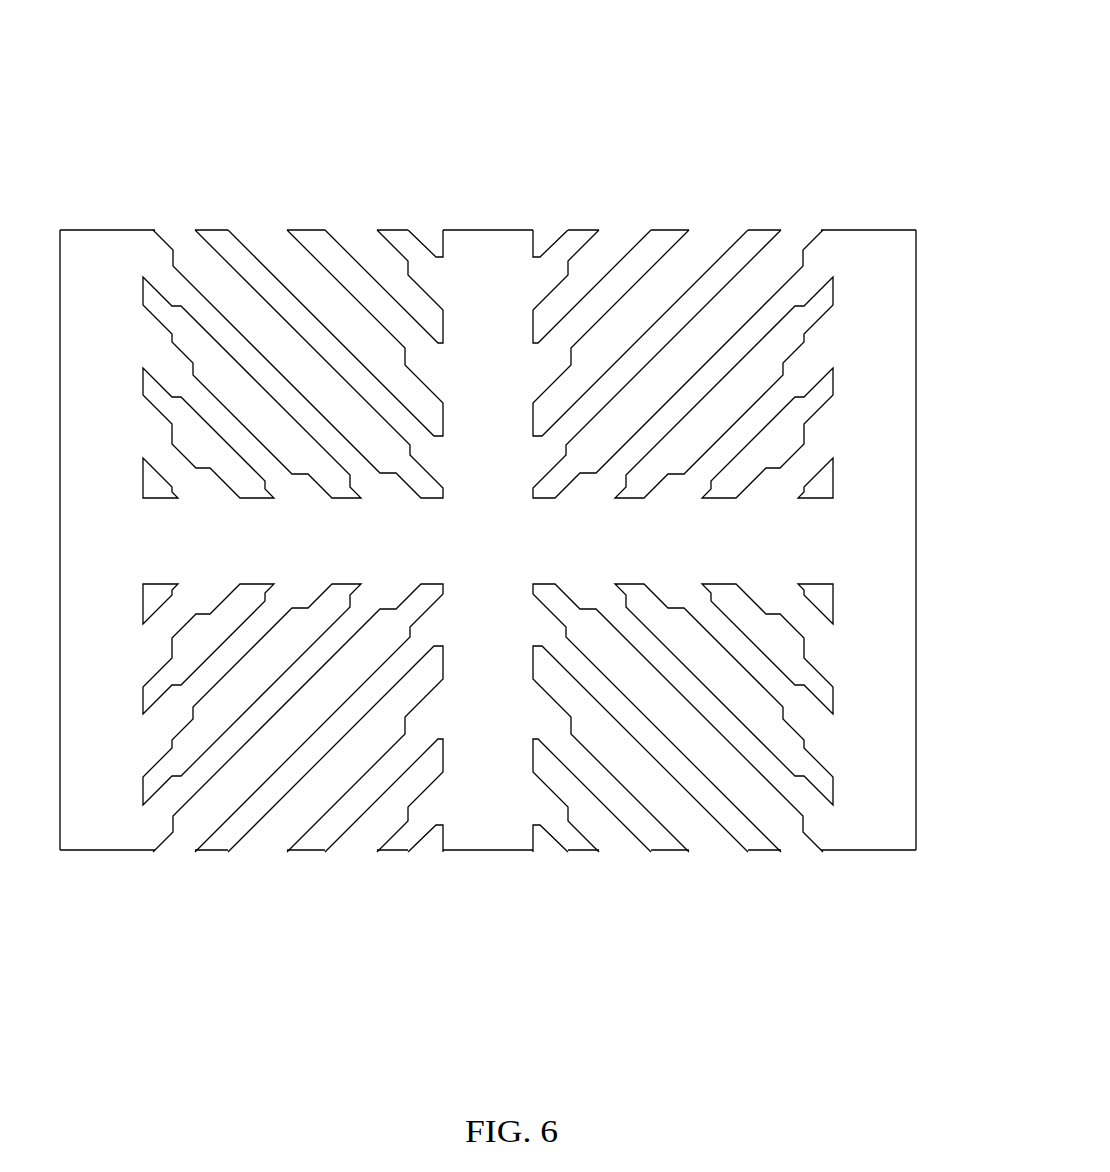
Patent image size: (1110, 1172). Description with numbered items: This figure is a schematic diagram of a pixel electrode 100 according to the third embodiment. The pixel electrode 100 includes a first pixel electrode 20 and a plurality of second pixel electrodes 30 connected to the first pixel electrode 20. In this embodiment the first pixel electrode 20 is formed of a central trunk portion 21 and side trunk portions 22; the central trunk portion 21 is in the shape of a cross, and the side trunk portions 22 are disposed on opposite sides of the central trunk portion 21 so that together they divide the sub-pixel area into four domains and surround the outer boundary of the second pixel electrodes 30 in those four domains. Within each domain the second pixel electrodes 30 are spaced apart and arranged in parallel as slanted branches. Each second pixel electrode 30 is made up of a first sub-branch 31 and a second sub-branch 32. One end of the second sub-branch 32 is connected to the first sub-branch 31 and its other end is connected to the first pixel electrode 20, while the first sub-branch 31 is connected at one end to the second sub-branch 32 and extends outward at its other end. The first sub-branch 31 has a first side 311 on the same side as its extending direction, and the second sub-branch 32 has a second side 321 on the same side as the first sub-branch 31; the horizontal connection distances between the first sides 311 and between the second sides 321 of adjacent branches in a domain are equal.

The pixel electrode 100 is at (516, 518).
The first pixel electrode 20 is at (488, 518).
The central trunk portion 21 is at (482, 790).
The side trunk portions 22 is at (100, 267).
The second pixel electrodes 30 is at (488, 538).
The first sub-branch 31 is at (237, 345).
The first side 311 is at (314, 232).
The second sub-branch 32 is at (374, 478).
The second side 321 is at (419, 355).